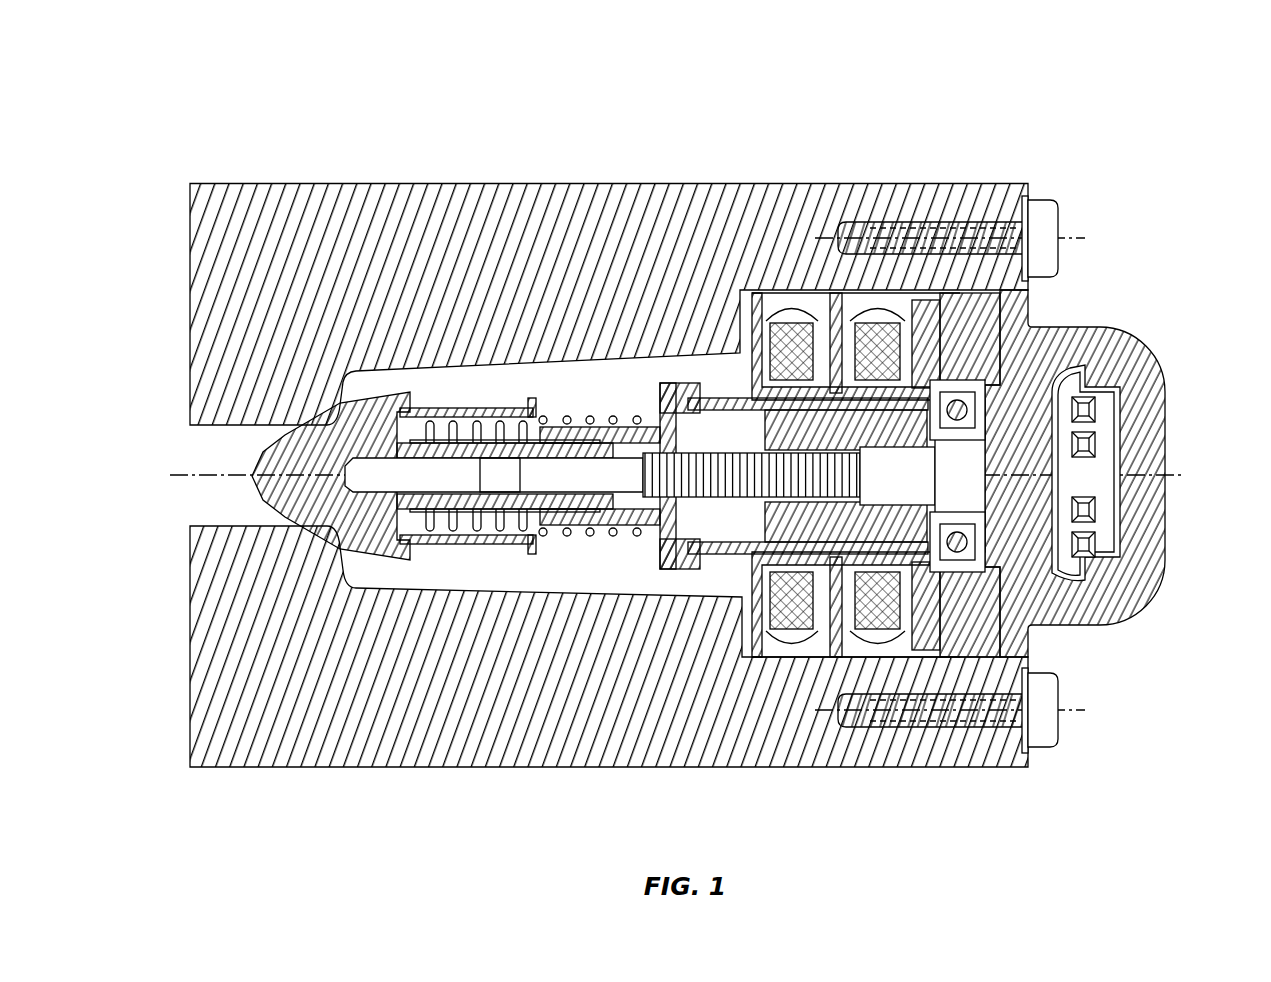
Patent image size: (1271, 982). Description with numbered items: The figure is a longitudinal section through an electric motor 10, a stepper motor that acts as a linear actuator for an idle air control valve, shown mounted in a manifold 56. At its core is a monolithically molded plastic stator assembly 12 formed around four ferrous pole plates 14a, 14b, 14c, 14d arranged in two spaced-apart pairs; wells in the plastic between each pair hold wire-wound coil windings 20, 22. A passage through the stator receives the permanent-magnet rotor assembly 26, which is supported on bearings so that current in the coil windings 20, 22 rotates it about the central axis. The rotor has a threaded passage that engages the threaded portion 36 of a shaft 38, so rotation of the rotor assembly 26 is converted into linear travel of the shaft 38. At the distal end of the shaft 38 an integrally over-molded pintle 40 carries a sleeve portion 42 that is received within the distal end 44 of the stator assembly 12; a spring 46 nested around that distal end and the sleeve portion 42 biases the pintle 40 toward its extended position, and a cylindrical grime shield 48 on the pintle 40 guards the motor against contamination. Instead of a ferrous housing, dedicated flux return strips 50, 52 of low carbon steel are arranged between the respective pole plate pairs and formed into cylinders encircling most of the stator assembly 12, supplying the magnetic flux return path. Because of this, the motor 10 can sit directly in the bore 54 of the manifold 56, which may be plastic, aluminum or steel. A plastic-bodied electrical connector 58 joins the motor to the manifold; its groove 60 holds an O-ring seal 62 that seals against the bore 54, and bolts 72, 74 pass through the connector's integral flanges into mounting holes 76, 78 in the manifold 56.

The electric motor 10 is at (252, 75).
The stator assembly 12 is at (819, 358).
The pole plate 14a is at (780, 323).
The pole plate 14b is at (815, 323).
The pole plate 14c is at (850, 293).
The pole plate 14d is at (927, 293).
The coil winding 20 is at (800, 560).
The coil winding 22 is at (873, 657).
The rotor assembly 26 is at (645, 395).
The threaded portion 36 is at (655, 510).
The shaft 38 is at (595, 485).
The pintle 40 is at (347, 372).
The sleeve portion 42 is at (605, 425).
The distal end 44 is at (553, 403).
The spring 46 is at (470, 372).
The grime shield 48 is at (417, 372).
The flux return strip 50 is at (790, 300).
The flux return strip 52 is at (870, 293).
The bore 54 is at (958, 293).
The manifold 56 is at (988, 293).
The electrical connector 58 is at (1135, 362).
The groove 60 is at (985, 628).
The O-ring seal 62 is at (1000, 652).
The bolt 72 is at (1050, 737).
The bolt 74 is at (1055, 215).
The mounting hole 76 is at (935, 727).
The mounting hole 78 is at (1000, 222).